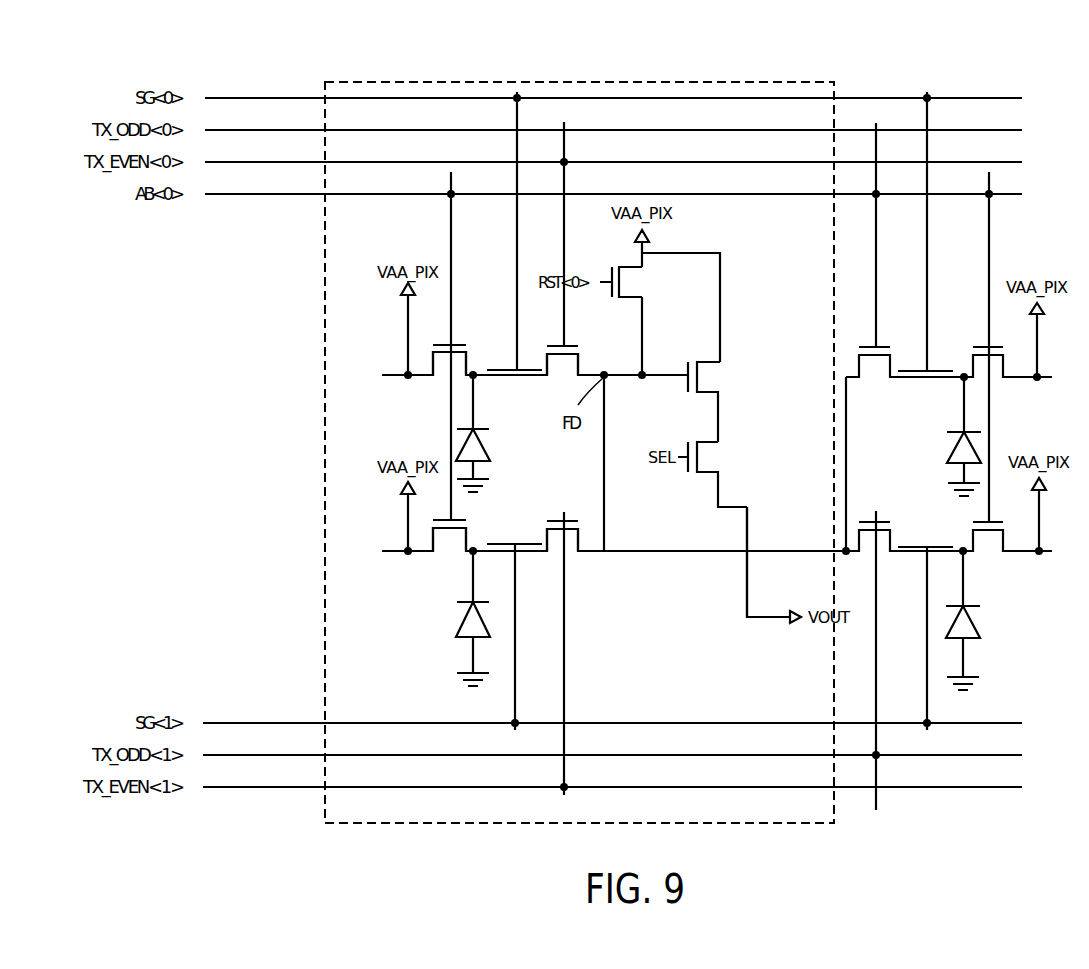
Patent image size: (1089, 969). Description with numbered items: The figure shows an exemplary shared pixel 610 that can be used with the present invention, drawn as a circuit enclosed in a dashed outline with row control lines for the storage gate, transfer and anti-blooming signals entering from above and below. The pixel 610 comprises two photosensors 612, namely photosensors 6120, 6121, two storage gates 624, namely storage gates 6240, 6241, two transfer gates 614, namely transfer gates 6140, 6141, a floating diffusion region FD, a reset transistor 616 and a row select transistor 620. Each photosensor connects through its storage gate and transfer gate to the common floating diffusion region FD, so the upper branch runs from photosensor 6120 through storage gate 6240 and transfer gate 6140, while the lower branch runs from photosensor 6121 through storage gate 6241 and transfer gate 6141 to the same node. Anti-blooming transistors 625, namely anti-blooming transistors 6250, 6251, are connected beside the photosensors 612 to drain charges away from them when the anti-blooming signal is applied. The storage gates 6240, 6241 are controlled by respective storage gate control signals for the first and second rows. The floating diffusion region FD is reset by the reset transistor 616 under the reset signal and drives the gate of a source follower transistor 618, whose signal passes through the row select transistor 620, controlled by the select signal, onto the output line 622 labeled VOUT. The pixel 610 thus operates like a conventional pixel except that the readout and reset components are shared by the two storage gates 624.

The shared pixel 610 is at (300, 52).
The photosensor 612 is at (482, 537).
The photosensor 6120 is at (487, 452).
The photosensor 6121 is at (455, 637).
The transfer gate 614 is at (593, 479).
The transfer gate 6140 is at (579, 346).
The transfer gate 6141 is at (580, 555).
The reset transistor 616 is at (613, 299).
The source follower transistor 618 is at (720, 362).
The row select transistor 620 is at (718, 442).
The output line 622 is at (747, 507).
The storage gate 624 is at (522, 434).
The storage gate 6240 is at (525, 370).
The storage gate 6241 is at (515, 546).
The anti-blooming transistor 625 is at (453, 450).
The anti-blooming transistor 6250 is at (458, 345).
The anti-blooming transistor 6251 is at (437, 555).